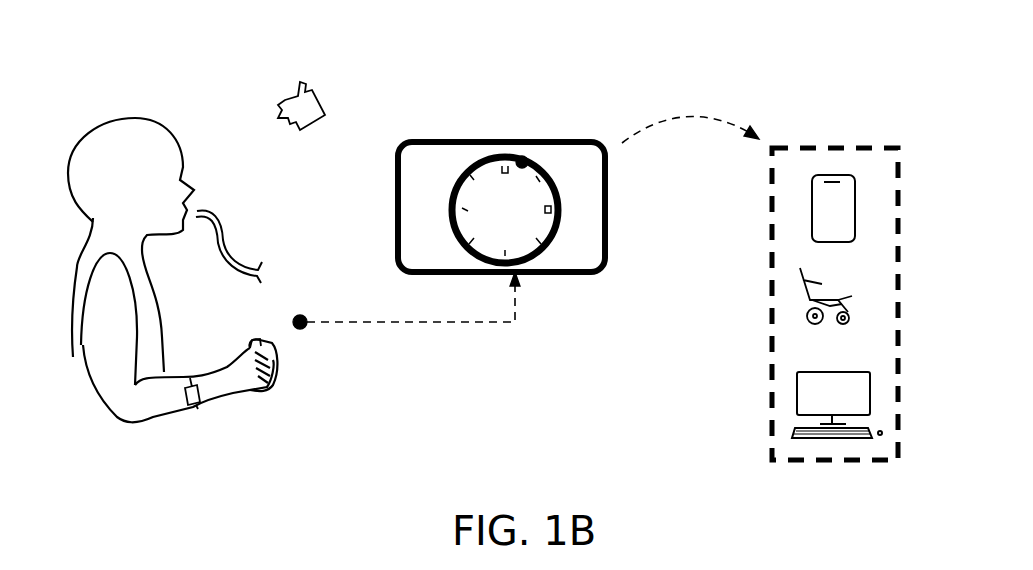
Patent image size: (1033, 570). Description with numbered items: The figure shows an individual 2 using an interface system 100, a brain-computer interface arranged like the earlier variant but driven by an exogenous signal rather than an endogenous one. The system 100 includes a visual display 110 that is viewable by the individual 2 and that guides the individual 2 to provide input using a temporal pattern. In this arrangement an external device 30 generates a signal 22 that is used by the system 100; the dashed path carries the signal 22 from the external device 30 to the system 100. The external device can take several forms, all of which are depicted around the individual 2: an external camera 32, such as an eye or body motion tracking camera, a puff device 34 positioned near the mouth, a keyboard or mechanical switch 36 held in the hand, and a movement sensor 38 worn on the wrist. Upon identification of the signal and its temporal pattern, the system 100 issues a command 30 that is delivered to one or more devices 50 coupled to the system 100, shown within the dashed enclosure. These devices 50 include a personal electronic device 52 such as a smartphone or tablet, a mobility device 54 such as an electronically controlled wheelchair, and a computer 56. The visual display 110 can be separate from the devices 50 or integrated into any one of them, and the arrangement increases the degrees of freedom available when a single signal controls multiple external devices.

The individual 2 is at (68, 157).
The signal 22 is at (322, 323).
The external device 30 is at (299, 314).
The external camera 32 is at (298, 98).
The puff device 34 is at (223, 223).
The keyboard or mechanical switch 36 is at (263, 350).
The movement sensor 38 is at (200, 407).
The external devices 50 is at (815, 146).
The personal electronic device 52 is at (858, 198).
The mobility device 54 is at (862, 300).
The computer 56 is at (872, 407).
The interface system 100 is at (545, 82).
The visual display 110 is at (568, 277).